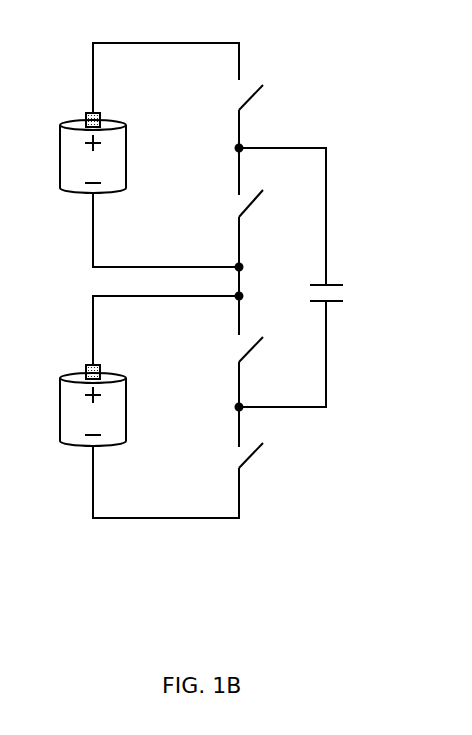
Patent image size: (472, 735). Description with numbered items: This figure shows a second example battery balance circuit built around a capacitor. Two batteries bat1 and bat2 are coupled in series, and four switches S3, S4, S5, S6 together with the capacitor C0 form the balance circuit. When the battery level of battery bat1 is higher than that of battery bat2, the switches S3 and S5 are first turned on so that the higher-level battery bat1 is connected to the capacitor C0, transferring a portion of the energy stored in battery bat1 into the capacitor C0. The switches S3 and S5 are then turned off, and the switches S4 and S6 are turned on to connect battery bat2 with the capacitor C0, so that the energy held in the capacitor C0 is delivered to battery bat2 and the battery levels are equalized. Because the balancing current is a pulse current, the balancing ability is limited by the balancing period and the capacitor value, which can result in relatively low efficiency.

The switch S3 is at (228, 100).
The switch S4 is at (228, 206).
The switch S5 is at (230, 349).
The switch S6 is at (230, 460).
The capacitor C0 is at (342, 294).
The battery bat1 is at (122, 153).
The battery bat2 is at (122, 405).